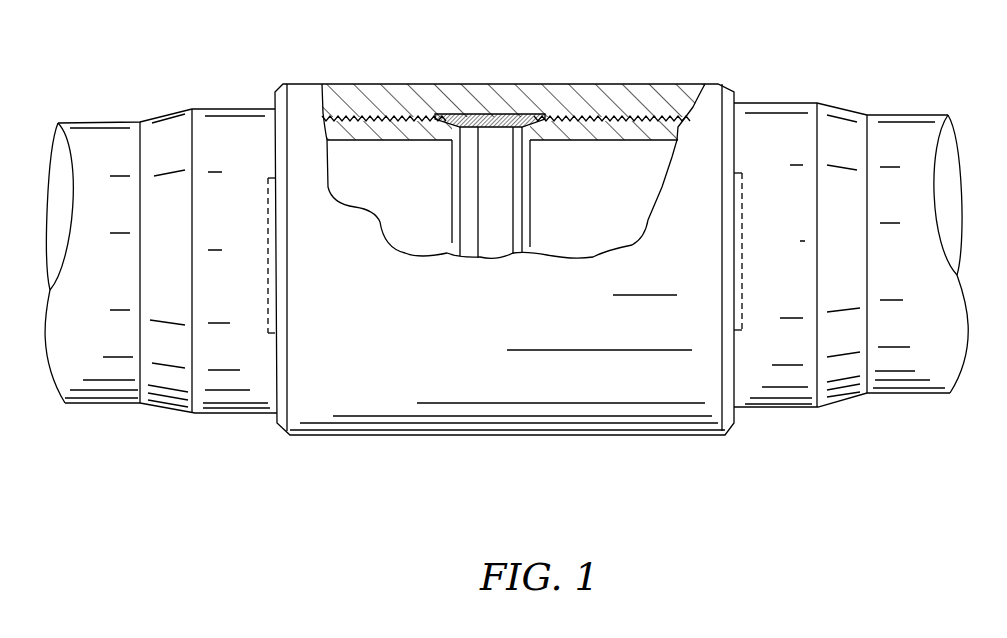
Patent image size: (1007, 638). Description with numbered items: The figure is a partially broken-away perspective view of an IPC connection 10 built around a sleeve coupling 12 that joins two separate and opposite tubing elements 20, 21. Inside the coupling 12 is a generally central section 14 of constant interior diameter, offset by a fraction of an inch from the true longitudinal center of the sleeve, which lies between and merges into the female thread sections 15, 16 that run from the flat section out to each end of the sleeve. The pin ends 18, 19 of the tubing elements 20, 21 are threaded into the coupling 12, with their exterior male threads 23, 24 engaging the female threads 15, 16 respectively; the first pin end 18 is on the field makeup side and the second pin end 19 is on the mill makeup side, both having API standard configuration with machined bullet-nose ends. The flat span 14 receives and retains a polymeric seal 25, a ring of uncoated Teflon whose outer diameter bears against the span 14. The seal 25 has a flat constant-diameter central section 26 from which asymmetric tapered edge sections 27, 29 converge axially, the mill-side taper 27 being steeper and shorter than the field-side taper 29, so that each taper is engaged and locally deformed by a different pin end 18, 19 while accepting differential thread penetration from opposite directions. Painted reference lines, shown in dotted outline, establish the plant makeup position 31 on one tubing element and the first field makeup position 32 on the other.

The connection 10 is at (493, 440).
The sleeve coupling 12 is at (642, 423).
The central section of constant interior diameter 14 is at (511, 112).
The female thread section 15 is at (354, 114).
The female thread section 16 is at (665, 112).
The first pin end 18 is at (461, 130).
The second pin end 19 is at (525, 130).
The tubing element 20 is at (240, 414).
The tubing element 21 is at (782, 408).
The exterior male thread 23 is at (418, 128).
The exterior male thread 24 is at (622, 128).
The polymeric seal 25 is at (497, 129).
The central section of the seal 26 is at (482, 129).
The tapered edge section 27 is at (519, 130).
The tapered edge section 29 is at (462, 146).
The plant makeup position mark 31 is at (742, 173).
The first field makeup position mark 32 is at (268, 178).